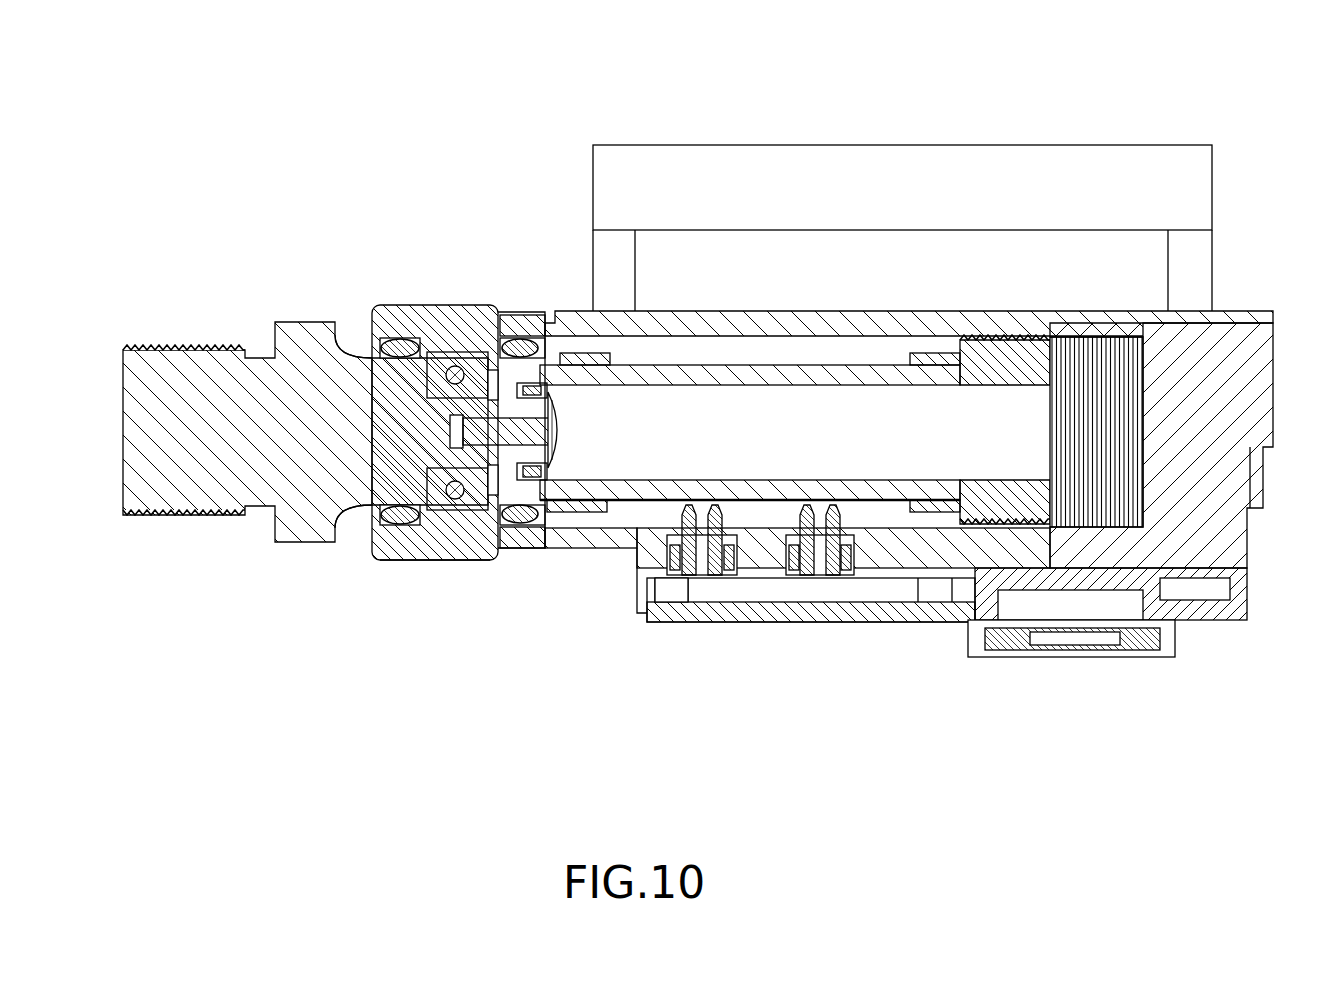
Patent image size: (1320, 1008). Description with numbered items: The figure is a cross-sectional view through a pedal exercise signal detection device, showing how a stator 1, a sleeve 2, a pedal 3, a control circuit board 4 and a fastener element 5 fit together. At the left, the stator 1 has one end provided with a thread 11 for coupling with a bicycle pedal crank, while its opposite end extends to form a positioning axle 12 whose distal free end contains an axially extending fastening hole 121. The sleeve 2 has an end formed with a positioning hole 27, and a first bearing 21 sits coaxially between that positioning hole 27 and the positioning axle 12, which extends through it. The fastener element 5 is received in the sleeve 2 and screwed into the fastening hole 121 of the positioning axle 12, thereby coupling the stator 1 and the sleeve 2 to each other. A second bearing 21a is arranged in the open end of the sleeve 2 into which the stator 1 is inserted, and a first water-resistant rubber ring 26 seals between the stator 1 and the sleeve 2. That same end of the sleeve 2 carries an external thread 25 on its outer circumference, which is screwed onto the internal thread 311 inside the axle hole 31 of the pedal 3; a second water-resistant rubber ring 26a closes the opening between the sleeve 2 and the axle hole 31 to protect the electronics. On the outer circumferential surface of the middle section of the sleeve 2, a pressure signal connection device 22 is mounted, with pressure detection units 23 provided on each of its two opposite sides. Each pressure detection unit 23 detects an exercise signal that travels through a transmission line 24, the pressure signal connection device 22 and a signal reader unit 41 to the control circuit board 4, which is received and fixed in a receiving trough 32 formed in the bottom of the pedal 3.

The stator 1 is at (120, 410).
The thread 11 is at (185, 348).
The fastening hole 121 is at (372, 558).
The sleeve 2 is at (415, 553).
The first bearing 21 is at (600, 548).
The second bearing 21a is at (448, 560).
The positioning axle 12 is at (462, 368).
The first water-resistant rubber ring 26 is at (400, 338).
The second water-resistant rubber ring 26a is at (530, 337).
The positioning hole 27 is at (518, 382).
The fastener element 5 is at (565, 445).
The pedal 3 is at (875, 145).
The axle hole 31 is at (858, 362).
The internal thread 311 is at (1092, 530).
The transmission line 24 is at (893, 520).
The pressure detection unit 23 is at (608, 503).
The pressure signal connection device 22 is at (800, 585).
The receiving trough 32 is at (838, 600).
The control circuit board 4 is at (765, 620).
The signal reader unit 41 is at (688, 622).
The external thread 25 is at (1000, 530).